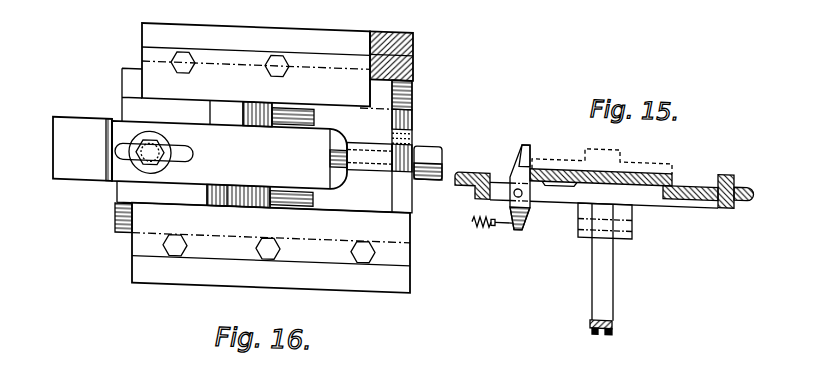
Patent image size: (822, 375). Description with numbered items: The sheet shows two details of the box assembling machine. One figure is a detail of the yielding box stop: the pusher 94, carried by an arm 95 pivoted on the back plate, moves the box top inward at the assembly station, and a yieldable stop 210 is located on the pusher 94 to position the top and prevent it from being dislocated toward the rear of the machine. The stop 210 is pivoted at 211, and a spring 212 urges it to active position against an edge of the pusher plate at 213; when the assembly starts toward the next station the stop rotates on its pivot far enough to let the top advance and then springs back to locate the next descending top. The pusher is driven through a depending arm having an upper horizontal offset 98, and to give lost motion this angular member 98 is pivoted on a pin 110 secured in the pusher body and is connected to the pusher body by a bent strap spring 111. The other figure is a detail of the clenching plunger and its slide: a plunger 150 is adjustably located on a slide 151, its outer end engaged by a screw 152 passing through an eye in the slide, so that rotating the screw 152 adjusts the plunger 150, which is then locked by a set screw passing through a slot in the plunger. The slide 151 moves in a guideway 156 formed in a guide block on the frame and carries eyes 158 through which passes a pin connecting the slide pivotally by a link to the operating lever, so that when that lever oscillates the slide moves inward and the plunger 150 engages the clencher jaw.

In FIG. 15, the pusher 94 is at (624, 163).
In FIG. 15, the arm 95 is at (596, 205).
In FIG. 15, the upper horizontal offset 98 is at (580, 261).
In FIG. 15, the pin 110 is at (624, 224).
In FIG. 15, the bent strap spring 111 is at (575, 320).
In FIG. 16, the plunger 150 is at (80, 133).
In FIG. 16, the slide 151 is at (429, 147).
In FIG. 16, the screw 152 is at (450, 157).
In FIG. 16, the guideway 156 is at (265, 62).
In FIG. 16, the eyes 158 is at (229, 156).
In FIG. 15, the yieldable stop 210 is at (499, 186).
In FIG. 15, the pivot 211 is at (525, 236).
In FIG. 15, the spring 212 is at (488, 245).
In FIG. 15, the edge of the pusher plate 213 is at (544, 145).